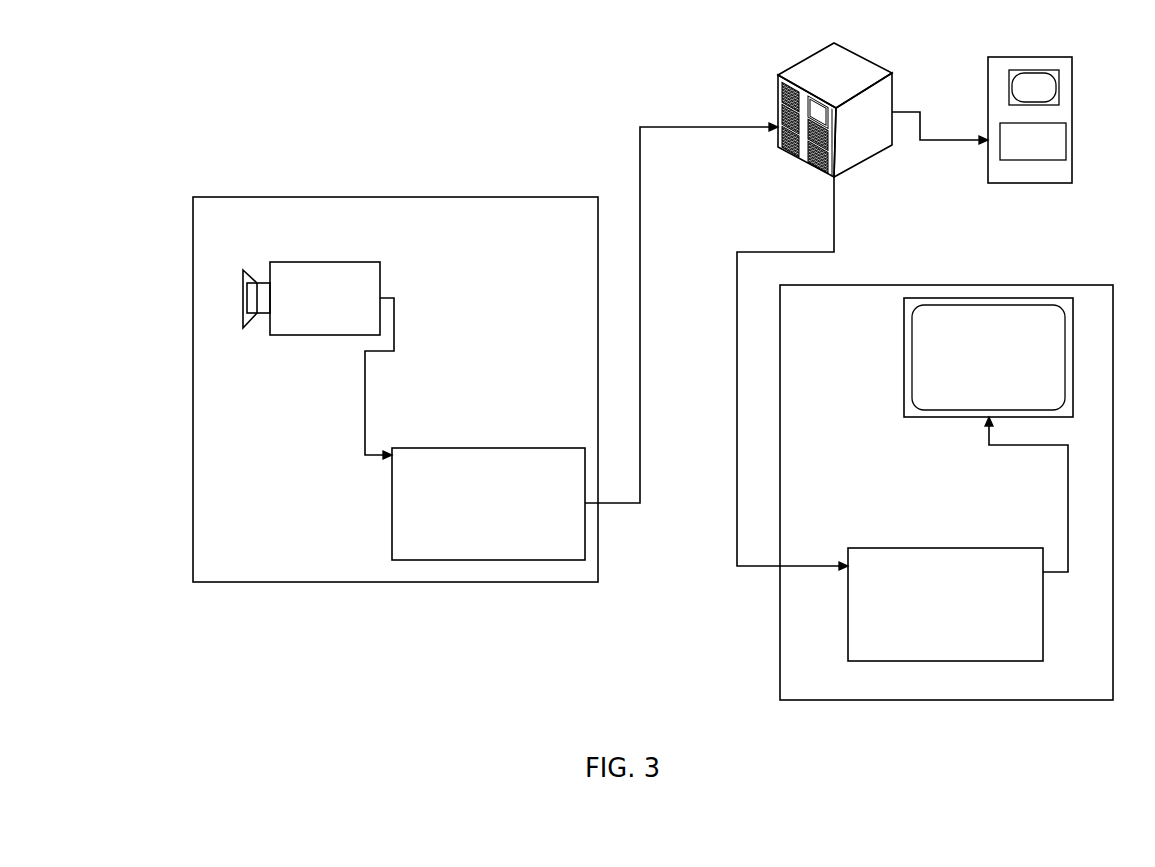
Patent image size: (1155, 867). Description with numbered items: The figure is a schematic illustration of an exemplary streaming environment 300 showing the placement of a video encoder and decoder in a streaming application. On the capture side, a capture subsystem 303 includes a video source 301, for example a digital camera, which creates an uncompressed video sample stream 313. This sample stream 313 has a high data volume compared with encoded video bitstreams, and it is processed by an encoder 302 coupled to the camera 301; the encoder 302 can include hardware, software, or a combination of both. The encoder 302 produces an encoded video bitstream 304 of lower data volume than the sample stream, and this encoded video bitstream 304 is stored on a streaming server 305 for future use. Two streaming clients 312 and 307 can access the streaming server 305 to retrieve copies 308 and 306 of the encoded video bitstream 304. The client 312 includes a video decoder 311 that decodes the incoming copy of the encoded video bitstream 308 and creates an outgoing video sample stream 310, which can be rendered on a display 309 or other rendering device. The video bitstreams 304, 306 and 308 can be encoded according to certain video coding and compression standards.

The streaming environment 300 is at (238, 82).
The video source 301 is at (323, 258).
The encoder 302 is at (498, 445).
The capture subsystem 303 is at (385, 583).
The encoded video bitstream 304 is at (638, 153).
The streaming server 305 is at (783, 93).
The copy of encoded video bitstream 306 is at (950, 142).
The streaming client 307 is at (1077, 87).
The copy of encoded video bitstream 308 is at (737, 418).
The display 309 is at (902, 348).
The outgoing video sample stream 310 is at (1067, 508).
The video decoder 311 is at (847, 632).
The streaming client 312 is at (778, 643).
The uncompressed video sample stream 313 is at (363, 413).